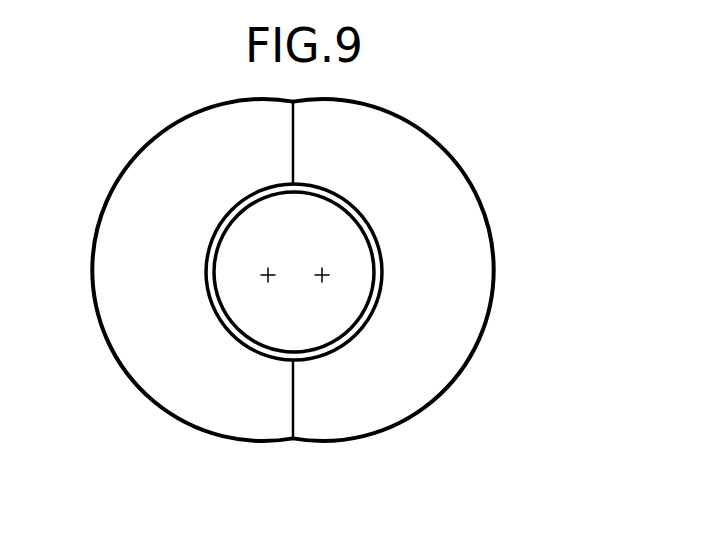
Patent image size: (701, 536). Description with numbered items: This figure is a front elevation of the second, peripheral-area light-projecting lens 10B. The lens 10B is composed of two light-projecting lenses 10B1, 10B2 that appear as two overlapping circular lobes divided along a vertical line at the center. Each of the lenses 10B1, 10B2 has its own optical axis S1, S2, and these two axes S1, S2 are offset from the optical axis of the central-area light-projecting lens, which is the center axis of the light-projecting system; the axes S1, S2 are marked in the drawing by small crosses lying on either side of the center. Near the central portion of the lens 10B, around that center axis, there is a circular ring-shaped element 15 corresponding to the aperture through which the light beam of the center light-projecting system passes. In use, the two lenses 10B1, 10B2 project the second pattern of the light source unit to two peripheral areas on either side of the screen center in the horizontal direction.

The peripheral-area light-projecting lens 10B is at (329, 296).
The light-projecting lens 10B1 is at (442, 400).
The light-projecting lens 10B2 is at (137, 388).
The central ring / bore 15 is at (271, 323).
The optical axis S1 is at (323, 268).
The optical axis S2 is at (265, 272).